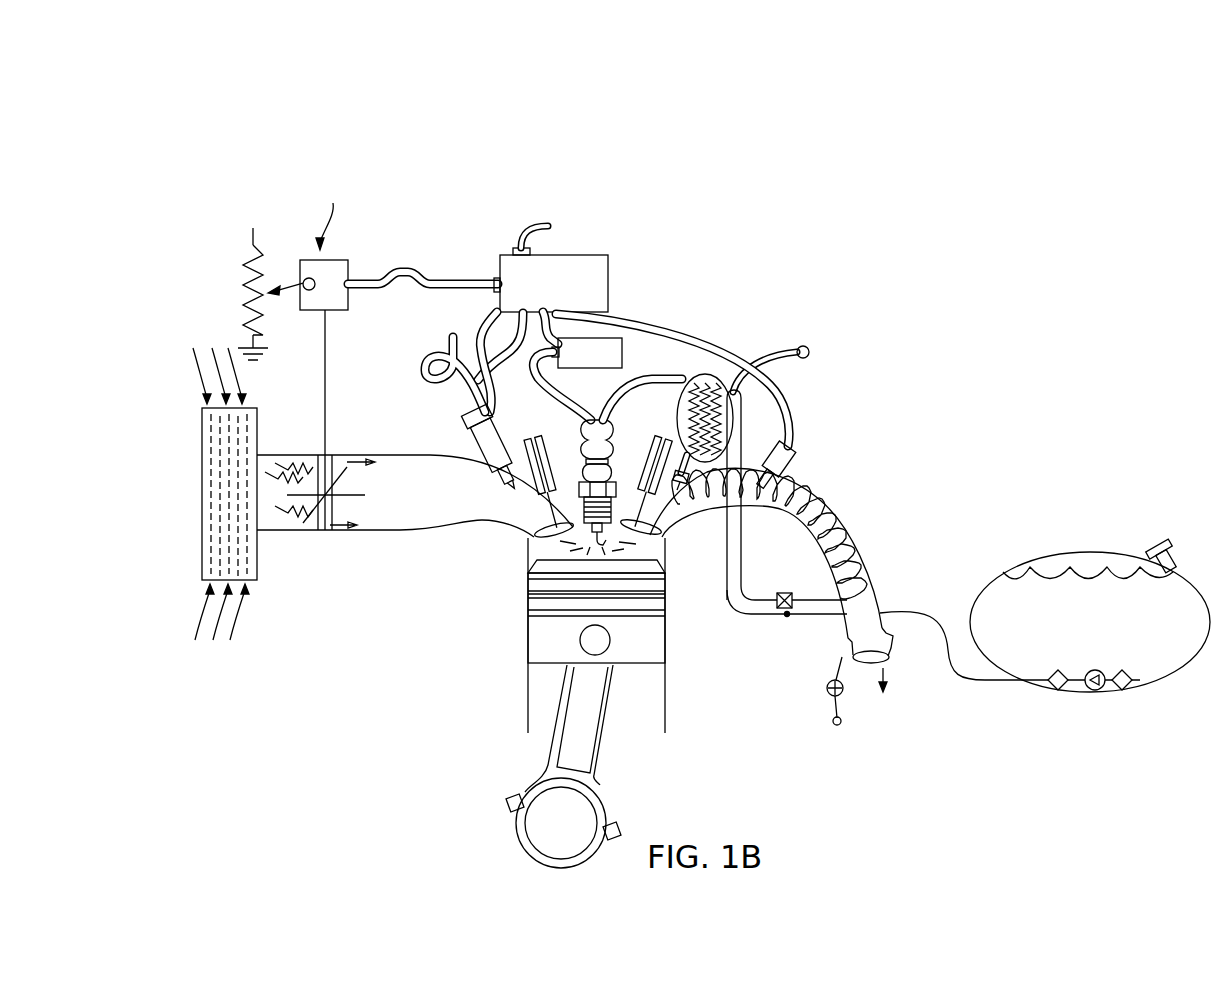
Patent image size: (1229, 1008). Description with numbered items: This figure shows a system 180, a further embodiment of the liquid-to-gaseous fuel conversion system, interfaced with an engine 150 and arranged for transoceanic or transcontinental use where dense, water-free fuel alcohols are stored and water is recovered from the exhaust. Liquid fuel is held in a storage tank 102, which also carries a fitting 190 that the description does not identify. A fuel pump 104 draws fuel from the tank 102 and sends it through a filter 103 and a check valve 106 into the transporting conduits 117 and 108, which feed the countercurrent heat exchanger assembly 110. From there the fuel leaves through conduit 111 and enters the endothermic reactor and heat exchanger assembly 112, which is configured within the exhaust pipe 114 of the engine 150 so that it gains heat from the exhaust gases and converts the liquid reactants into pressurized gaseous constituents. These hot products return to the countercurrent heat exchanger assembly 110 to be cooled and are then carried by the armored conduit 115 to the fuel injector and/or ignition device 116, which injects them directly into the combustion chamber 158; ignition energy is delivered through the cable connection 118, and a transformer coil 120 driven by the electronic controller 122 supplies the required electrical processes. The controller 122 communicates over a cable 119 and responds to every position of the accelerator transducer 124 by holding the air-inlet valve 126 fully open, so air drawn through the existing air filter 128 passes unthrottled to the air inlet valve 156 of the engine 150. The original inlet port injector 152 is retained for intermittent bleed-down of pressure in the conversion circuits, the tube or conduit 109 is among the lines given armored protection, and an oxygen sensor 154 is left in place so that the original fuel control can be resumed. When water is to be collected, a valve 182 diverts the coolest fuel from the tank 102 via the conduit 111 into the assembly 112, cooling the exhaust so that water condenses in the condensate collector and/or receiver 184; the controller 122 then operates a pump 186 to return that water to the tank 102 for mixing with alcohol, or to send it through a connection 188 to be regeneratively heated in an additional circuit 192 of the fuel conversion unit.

The system 180 is at (268, 112).
The accelerator transducer 124 is at (352, 300).
The cable 119 is at (492, 298).
The electronic controller 122 is at (612, 262).
The transformer coil 120 is at (625, 355).
The conduit 109 is at (422, 372).
The inlet port injector 152 is at (473, 428).
The cable connection 118 is at (527, 378).
The fuel injector and/or ignition device 116 is at (615, 422).
The armored conduit 115 is at (677, 382).
The countercurrent heat exchanger assembly 110 is at (765, 352).
The connection 188 is at (812, 350).
The conduit 108 is at (742, 403).
The conduit 117 is at (925, 610).
The additional circuit 192 is at (740, 428).
The oxygen sensor 154 is at (795, 463).
The endothermic reactor and heat exchanger assembly 112 is at (855, 557).
The exhaust pipe 114 is at (880, 603).
The valve 182 is at (783, 592).
The combustion chamber 158 is at (657, 561).
The engine 150 is at (677, 661).
The air inlet valve 156 is at (533, 510).
The air-inlet valve 126 is at (365, 517).
The air filter 128 is at (202, 527).
The conduit 111 is at (815, 622).
The condensate collector and/or receiver 184 is at (890, 644).
The pump 186 is at (827, 690).
The storage tank 102 is at (1005, 570).
The fuel filler cap 190 is at (1160, 548).
The check valve 106 is at (1053, 690).
The fuel pump 104 is at (1085, 692).
The filter 103 is at (1115, 692).